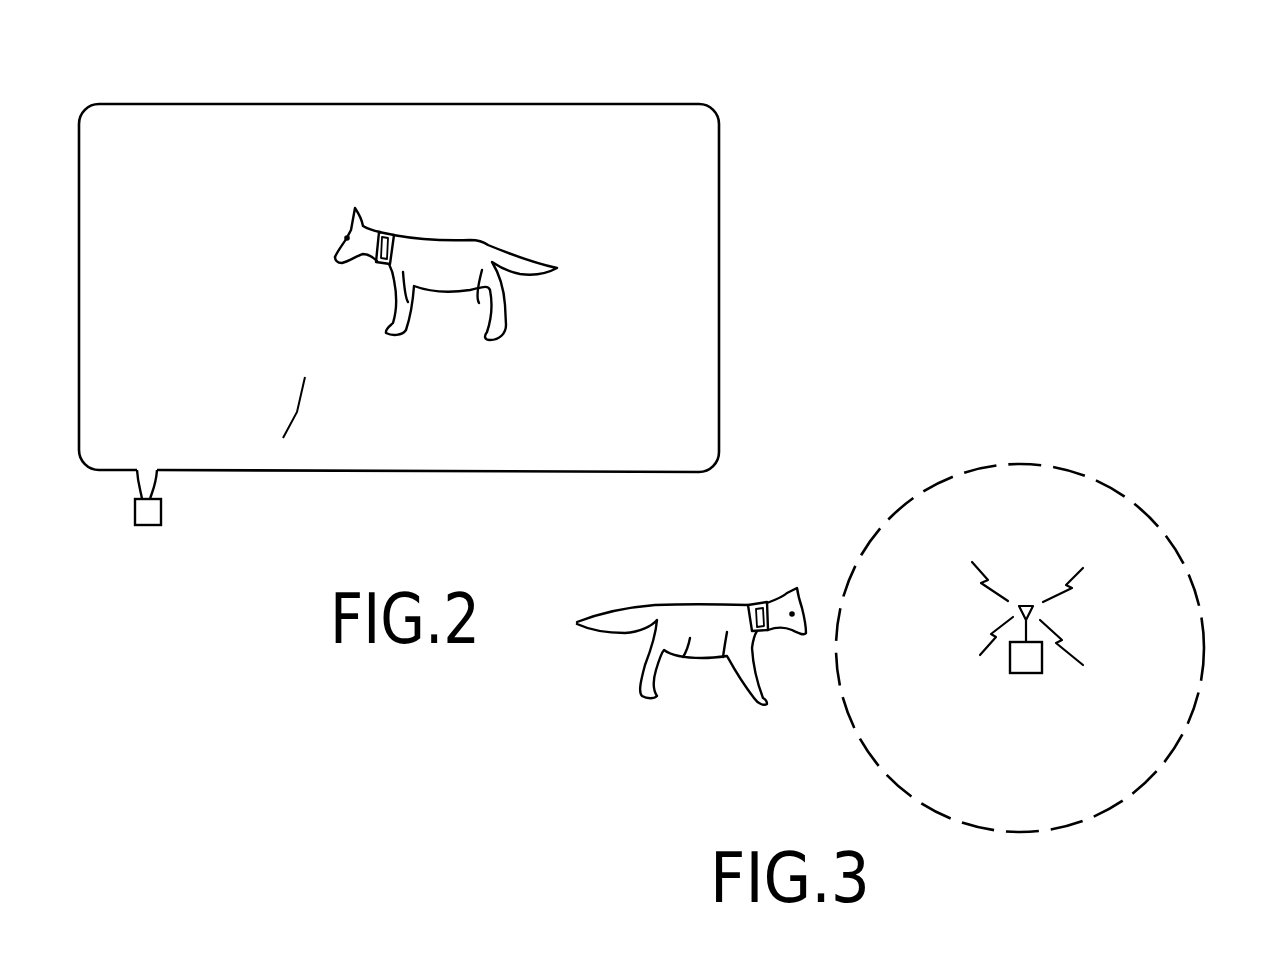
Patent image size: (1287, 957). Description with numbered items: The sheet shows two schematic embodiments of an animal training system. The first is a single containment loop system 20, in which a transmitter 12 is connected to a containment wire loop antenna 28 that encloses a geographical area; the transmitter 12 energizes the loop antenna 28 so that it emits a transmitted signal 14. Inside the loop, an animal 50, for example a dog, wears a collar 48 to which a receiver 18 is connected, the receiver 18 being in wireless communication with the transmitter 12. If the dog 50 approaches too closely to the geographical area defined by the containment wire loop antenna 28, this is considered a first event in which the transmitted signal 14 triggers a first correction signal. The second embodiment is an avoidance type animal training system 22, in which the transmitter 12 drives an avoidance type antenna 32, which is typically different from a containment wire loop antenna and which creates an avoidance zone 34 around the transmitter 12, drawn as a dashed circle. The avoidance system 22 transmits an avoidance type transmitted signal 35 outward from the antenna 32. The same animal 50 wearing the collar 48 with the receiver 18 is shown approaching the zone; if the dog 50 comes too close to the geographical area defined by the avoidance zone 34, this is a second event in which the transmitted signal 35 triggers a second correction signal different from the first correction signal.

In FIG. 2, the transmitter 12 is at (150, 526).
In FIG. 3, the transmitter 12 is at (1030, 662).
In FIG. 2, the transmitted signal 14 is at (292, 420).
In FIG. 2, the receiver 18 is at (397, 238).
In FIG. 3, the receiver 18 is at (768, 600).
In FIG. 2, the single containment loop system 20 is at (683, 84).
In FIG. 3, the avoidance type animal training system 22 is at (1147, 448).
In FIG. 2, the containment wire loop antenna 28 is at (168, 103).
In FIG. 3, the avoidance type antenna 32 is at (1028, 605).
In FIG. 3, the avoidance zone 34 is at (1140, 500).
In FIG. 3, the avoidance type transmitted signal 35 is at (1077, 578).
In FIG. 2, the collar 48 is at (393, 235).
In FIG. 3, the collar 48 is at (753, 603).
In FIG. 2, the animal 50 is at (480, 240).
In FIG. 3, the animal 50 is at (697, 604).